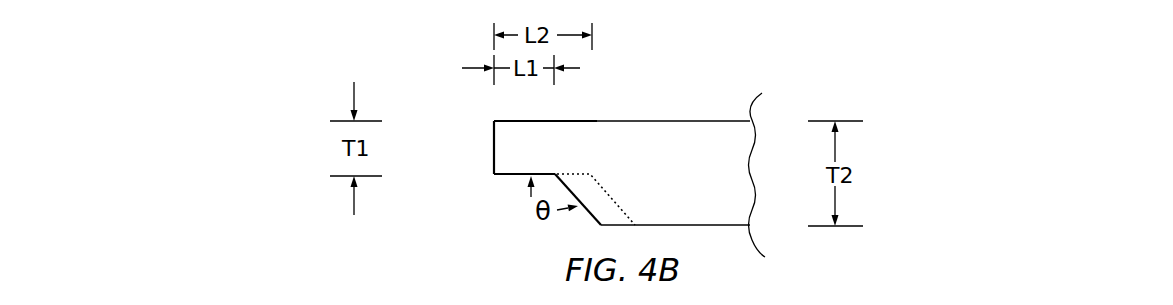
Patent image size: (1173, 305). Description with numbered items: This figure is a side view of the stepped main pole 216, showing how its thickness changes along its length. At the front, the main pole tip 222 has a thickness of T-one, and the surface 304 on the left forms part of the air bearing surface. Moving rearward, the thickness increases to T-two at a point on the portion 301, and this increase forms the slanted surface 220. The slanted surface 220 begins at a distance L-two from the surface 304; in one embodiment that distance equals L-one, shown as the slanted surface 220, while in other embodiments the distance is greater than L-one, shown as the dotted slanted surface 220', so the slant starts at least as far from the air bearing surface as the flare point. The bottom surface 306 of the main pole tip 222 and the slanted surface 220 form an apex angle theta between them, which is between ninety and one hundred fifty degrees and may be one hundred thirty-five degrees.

The stepped main pole 216 is at (661, 49).
The main pole tip 222 is at (518, 112).
The surface 304 is at (485, 150).
The bottom surface 306 is at (503, 187).
The slanted surface 220 is at (509, 226).
The slanted surface 220' is at (691, 136).
The portion 301 is at (728, 206).